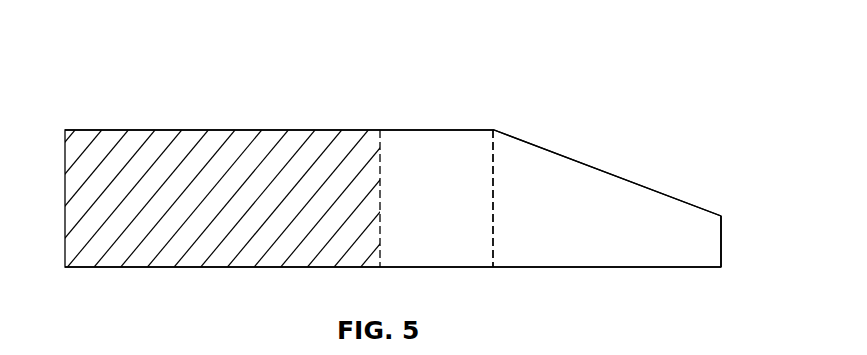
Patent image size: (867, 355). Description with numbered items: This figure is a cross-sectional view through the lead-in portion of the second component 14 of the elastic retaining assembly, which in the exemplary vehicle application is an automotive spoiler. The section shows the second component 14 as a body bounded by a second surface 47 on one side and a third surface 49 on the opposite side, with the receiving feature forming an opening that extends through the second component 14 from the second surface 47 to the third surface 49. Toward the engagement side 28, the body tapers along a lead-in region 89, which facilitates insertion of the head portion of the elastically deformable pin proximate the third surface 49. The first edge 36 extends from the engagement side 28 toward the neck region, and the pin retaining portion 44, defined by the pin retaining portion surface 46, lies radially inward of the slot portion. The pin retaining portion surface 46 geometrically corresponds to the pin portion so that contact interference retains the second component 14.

The second component 14 is at (120, 49).
The engagement side 28 is at (723, 240).
The first edge 36 is at (606, 225).
The pin retaining portion 44 is at (437, 130).
The pin retaining portion surface 46 is at (451, 225).
The second surface 47 is at (203, 267).
The third surface 49 is at (133, 130).
The lead-in region 89 is at (607, 171).